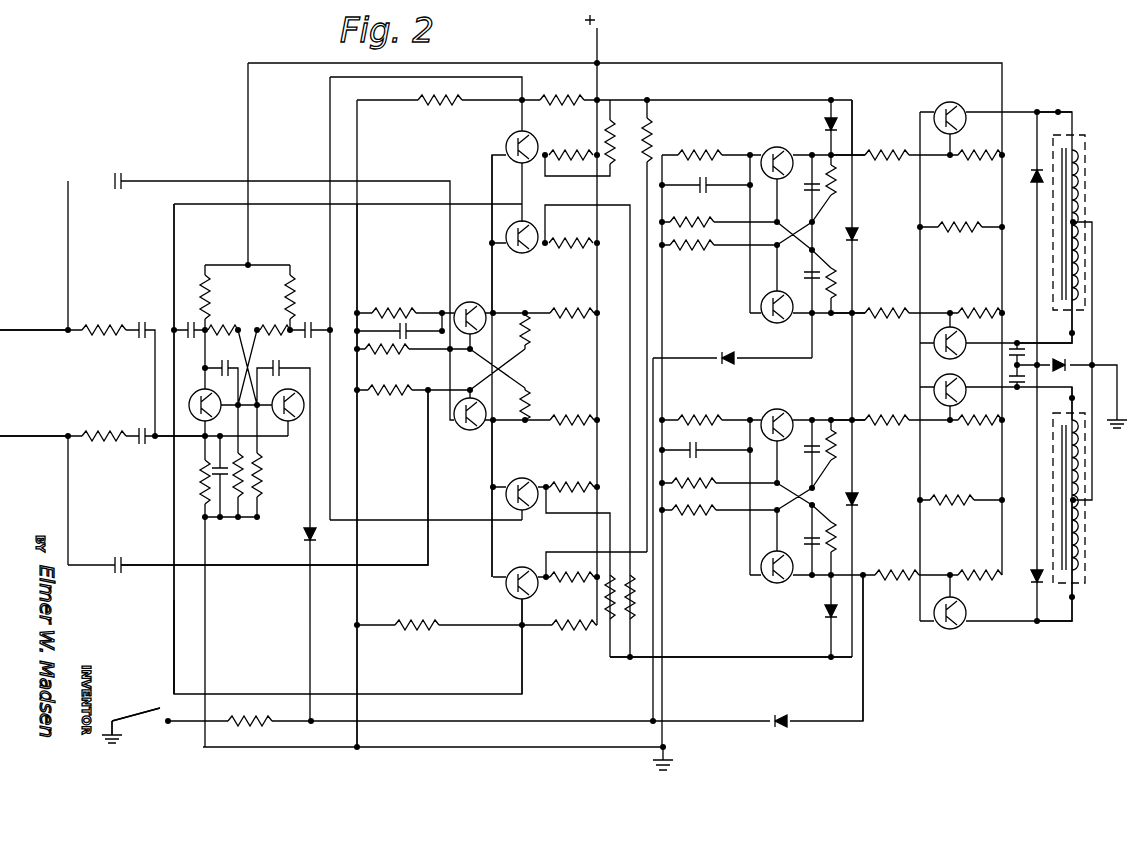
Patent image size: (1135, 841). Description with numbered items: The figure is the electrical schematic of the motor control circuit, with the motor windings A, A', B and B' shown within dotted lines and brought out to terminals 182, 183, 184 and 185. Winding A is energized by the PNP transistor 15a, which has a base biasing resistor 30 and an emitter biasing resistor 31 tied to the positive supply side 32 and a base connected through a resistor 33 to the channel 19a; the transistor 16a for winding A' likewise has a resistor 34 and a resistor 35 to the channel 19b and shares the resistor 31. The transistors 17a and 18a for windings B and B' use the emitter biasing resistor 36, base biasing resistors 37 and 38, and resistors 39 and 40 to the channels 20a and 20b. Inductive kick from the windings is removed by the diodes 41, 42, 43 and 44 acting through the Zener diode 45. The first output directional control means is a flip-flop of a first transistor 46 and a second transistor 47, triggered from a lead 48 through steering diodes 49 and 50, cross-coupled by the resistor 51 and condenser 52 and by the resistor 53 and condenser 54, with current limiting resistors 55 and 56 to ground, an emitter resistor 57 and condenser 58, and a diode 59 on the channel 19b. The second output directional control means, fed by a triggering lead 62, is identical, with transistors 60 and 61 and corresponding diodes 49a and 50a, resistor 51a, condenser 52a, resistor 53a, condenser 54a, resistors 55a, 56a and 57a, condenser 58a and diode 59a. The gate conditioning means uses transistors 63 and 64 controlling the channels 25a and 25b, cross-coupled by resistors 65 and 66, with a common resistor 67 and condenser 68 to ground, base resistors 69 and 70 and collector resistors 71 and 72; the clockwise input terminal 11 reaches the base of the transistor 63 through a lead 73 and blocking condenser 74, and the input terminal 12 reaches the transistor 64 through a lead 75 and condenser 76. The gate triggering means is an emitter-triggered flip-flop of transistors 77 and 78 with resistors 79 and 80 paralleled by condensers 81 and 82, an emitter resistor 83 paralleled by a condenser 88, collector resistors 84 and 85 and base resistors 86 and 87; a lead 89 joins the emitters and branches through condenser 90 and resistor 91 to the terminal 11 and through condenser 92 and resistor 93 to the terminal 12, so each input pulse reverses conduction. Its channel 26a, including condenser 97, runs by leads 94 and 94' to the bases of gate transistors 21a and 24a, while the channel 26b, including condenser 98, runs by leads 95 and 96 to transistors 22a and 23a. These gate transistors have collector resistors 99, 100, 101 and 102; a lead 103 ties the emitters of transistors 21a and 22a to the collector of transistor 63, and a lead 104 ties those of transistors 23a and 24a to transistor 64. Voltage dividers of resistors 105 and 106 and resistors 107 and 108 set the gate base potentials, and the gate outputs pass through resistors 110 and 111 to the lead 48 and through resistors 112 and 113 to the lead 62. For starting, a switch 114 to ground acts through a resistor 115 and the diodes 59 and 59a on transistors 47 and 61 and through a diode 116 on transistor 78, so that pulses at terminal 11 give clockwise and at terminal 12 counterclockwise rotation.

The clockwise input terminal 11 is at (24, 332).
The counterclockwise input terminal 12 is at (44, 442).
The PNP transistor 15a is at (961, 385).
The transistor 16a is at (951, 634).
The transistor 17a is at (953, 118).
The transistor 18a is at (934, 351).
The channel of first output directional control means 19a is at (838, 420).
The channel of first output directional control means 19b is at (865, 597).
The output channel of second output directional control means 20a is at (844, 155).
The channel of second output directional control means 20b is at (842, 318).
The transistor of gate 21 21a is at (538, 252).
The transistor of gate 22 22a is at (505, 126).
The transistor of gate 23 23a is at (540, 490).
The transistor of gate 24 24a is at (535, 592).
The channel of gate conditioning means 25a is at (493, 282).
The channel of gate conditioning means 25b is at (495, 470).
The output channel of gate triggering means 26a is at (174, 263).
The output channel of gate triggering means 26b is at (357, 273).
The base biasing resistor 30 is at (988, 433).
The emitter biasing resistor 31 is at (954, 502).
The positive side of D.C. supply 32 is at (598, 63).
The resistor 33 is at (872, 428).
The resistor 34 is at (962, 574).
The resistor 35 is at (904, 570).
The emitter biasing resistor 36 is at (955, 233).
The base biasing resistor 37 is at (978, 164).
The base biasing resistor 38 is at (974, 312).
The resistor 39 is at (897, 153).
The resistor 40 is at (892, 312).
The diode 41 is at (1034, 178).
The diode 42 is at (1022, 348).
The diode 43 is at (1022, 386).
The diode 44 is at (1035, 570).
The Zener diode 45 is at (1070, 364).
The first transistor 46 is at (783, 418).
The second transistor 47 is at (772, 586).
The lead 48 is at (758, 658).
The diode 49 is at (858, 504).
The diode 49a is at (860, 242).
The diode 50 is at (826, 622).
The diode 50a is at (836, 122).
The resistor 51 is at (832, 458).
The resistor 51a is at (836, 202).
The condenser 52 is at (810, 454).
The condenser 52a is at (810, 222).
The resistor 53 is at (840, 538).
The resistor 53a is at (845, 284).
The condenser 54 is at (804, 533).
The condenser 54a is at (810, 278).
The current limiting resistor 55 is at (705, 514).
The current limiting resistor 55a is at (698, 250).
The current limiting resistor 56 is at (700, 484).
The current limiting resistor 56a is at (710, 228).
The resistor 57 is at (720, 416).
The resistor 57a is at (725, 152).
The condenser 58 is at (708, 454).
The condenser 58a is at (710, 192).
The diode 59 is at (788, 729).
The diode 59a is at (740, 335).
The transistor 60 is at (780, 150).
The transistor 61 is at (778, 325).
The triggering lead 62 is at (784, 101).
The transistor 63 is at (472, 303).
The transistor 64 is at (470, 430).
The resistor 65 is at (531, 338).
The resistor 66 is at (536, 399).
The common resistor 67 is at (392, 309).
The condenser 68 is at (412, 326).
The resistor 69 is at (394, 356).
The resistor 70 is at (398, 402).
The resistor 71 is at (580, 309).
The resistor 72 is at (572, 420).
The lead 73 is at (300, 182).
The signal passing D.C. blocking condenser 74 is at (132, 182).
The lead 75 is at (389, 567).
The condenser 76 is at (120, 572).
The transistor 77 is at (200, 397).
The transistor 78 is at (289, 428).
The resistor 79 is at (218, 326).
The resistor 80 is at (271, 322).
The condenser 81 is at (234, 360).
The condenser 82 is at (286, 360).
The resistor 83 is at (206, 480).
The resistor 84 is at (208, 285).
The resistor 85 is at (292, 286).
The resistor 86 is at (240, 514).
The resistor 87 is at (258, 484).
The condenser 88 is at (216, 472).
The lead 89 is at (188, 446).
The D.C. blocking condenser 90 is at (144, 340).
The resistor 91 is at (115, 332).
The blocking condenser 92 is at (146, 450).
The resistor 93 is at (122, 430).
The lead 94 is at (348, 449).
The lead 94' is at (156, 647).
The lead 95 is at (356, 230).
The lead 96 is at (332, 462).
The condenser 97 is at (192, 336).
The condenser 98 is at (316, 322).
The resistor 99 is at (588, 155).
The resistor 100 is at (574, 243).
The resistor 101 is at (585, 492).
The resistor 102 is at (574, 576).
The lead 103 is at (492, 224).
The lead 104 is at (495, 550).
The resistor 105 is at (570, 100).
The resistor 106 is at (438, 105).
The resistor 107 is at (579, 640).
The resistor 108 is at (444, 642).
The resistor 110 is at (633, 602).
The resistor 111 is at (608, 615).
The resistor 112 is at (618, 167).
The resistor 113 is at (652, 142).
The switch 114 is at (152, 719).
The resistor 115 is at (283, 704).
The diode 116 is at (315, 538).
The terminal 182 is at (1072, 398).
The terminal 183 is at (1073, 623).
The terminal 184 is at (1056, 112).
The terminal 185 is at (1076, 335).
The winding A is at (1092, 495).
The winding A' is at (1094, 535).
The winding B is at (1092, 225).
The winding B' is at (1094, 261).